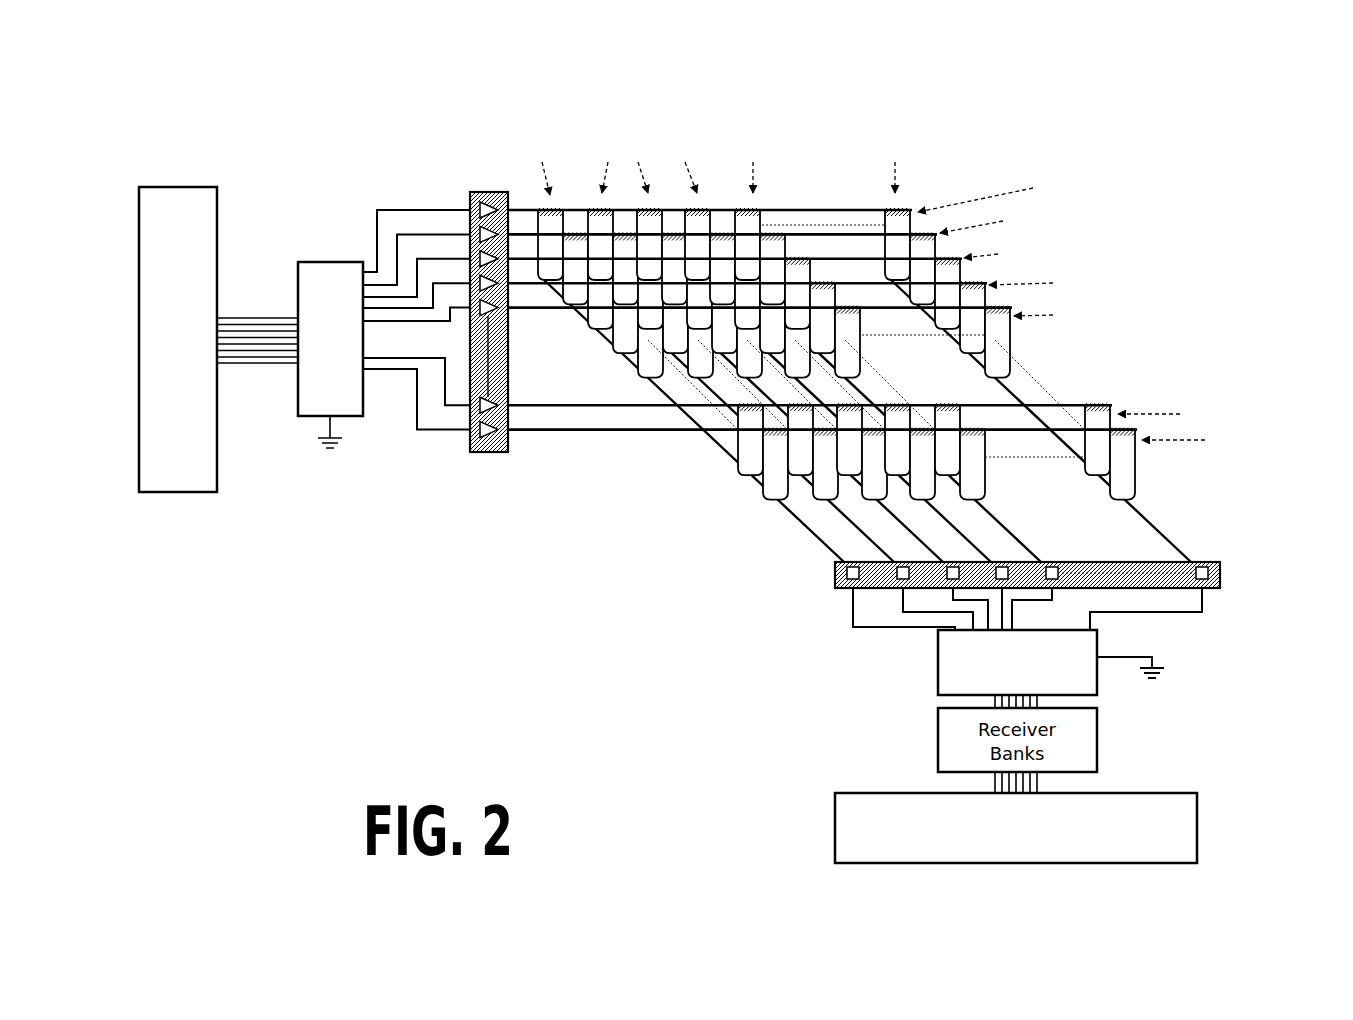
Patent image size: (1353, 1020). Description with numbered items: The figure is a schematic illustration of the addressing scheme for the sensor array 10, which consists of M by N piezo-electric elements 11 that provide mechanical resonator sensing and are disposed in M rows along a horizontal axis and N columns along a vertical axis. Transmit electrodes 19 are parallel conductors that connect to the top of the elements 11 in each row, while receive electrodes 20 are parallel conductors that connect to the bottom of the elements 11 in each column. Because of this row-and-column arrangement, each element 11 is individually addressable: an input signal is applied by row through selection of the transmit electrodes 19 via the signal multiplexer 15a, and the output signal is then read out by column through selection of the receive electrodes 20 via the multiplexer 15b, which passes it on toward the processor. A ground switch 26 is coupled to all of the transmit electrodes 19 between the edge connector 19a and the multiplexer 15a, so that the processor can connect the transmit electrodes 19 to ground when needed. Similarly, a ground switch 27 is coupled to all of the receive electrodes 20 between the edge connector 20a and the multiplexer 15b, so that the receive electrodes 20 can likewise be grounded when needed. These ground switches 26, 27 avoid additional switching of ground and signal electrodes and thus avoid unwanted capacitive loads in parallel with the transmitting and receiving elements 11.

The signal multiplexer 15a is at (172, 187).
The ground switch 26 is at (318, 262).
The edge connector 19a is at (480, 452).
The transmit electrodes 19 is at (556, 408).
The sensor array 10 is at (917, 314).
The elements 11 is at (1017, 330).
The receive electrodes 20 is at (833, 520).
The edge connector 20a is at (1220, 578).
The ground switch 27 is at (938, 668).
The multiplexer 15b is at (835, 822).